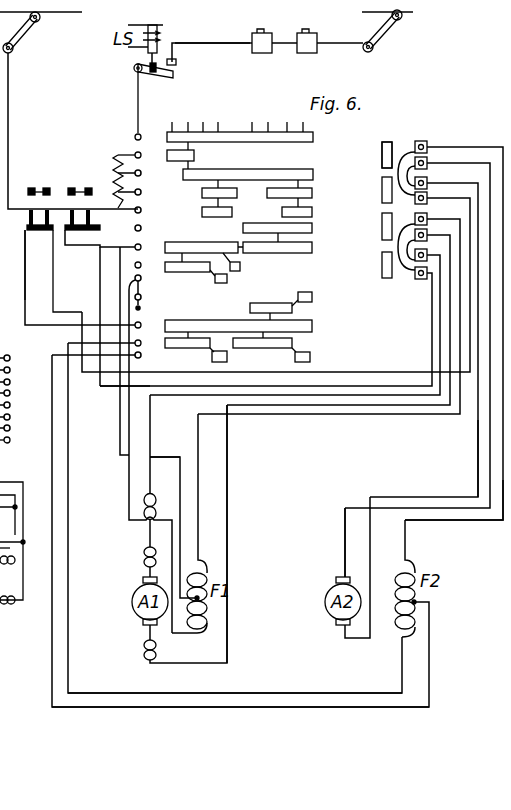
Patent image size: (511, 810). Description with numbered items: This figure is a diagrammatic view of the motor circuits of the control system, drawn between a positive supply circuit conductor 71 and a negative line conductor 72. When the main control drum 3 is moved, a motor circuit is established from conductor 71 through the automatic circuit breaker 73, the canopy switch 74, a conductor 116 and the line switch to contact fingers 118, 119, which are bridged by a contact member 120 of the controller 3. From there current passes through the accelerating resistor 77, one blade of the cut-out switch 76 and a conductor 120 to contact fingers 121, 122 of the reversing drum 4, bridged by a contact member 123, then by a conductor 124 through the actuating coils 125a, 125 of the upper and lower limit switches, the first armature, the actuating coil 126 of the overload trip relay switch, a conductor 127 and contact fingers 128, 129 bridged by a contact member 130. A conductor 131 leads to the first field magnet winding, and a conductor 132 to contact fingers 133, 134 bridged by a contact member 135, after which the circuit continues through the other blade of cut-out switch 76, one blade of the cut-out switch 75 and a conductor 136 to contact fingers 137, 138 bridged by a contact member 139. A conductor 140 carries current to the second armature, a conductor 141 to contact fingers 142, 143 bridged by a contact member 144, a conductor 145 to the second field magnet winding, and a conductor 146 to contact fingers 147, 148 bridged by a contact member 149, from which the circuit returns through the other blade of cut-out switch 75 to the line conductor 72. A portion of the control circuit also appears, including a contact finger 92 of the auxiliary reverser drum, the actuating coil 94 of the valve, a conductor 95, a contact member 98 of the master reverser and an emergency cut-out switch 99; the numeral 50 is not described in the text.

The negative line conductor 72 is at (66, 12).
The positive supply circuit conductor 71 is at (413, 12).
The automatic circuit breaker 73 is at (305, 53).
The canopy switch 74 is at (255, 53).
The conductor 116 is at (227, 47).
The contact finger 118 is at (141, 133).
The contact finger 119 is at (141, 174).
The contact member / conductor 120 is at (223, 139).
The main control drum 3 is at (283, 160).
The reversing drum 4 is at (393, 168).
The accelerating resistor 77 is at (118, 157).
The cut-out switch 75 is at (46, 181).
The cut-out switch 76 is at (80, 189).
The conductor 50 is at (25, 268).
The conductor 136 is at (61, 262).
The contact finger 134 is at (136, 247).
The contact finger 133 is at (136, 265).
The contact finger 148 is at (141, 325).
The contact finger 147 is at (141, 345).
The contact member 135 is at (208, 250).
The contact member 149 is at (175, 330).
The contact member 144 is at (382, 160).
The contact member 139 is at (382, 197).
The contact member 130 is at (382, 230).
The contact member 123 is at (382, 262).
The contact finger 143 is at (428, 146).
The contact finger 142 is at (428, 162).
The contact finger 138 is at (428, 182).
The contact finger 137 is at (428, 197).
The contact finger 129 is at (428, 218).
The contact finger 128 is at (435, 228).
The contact finger 122 is at (428, 254).
The contact finger 121 is at (421, 280).
The conductor 131 is at (405, 412).
The conductor 124 is at (440, 397).
The conductor 140 is at (478, 479).
The conductor 145 is at (492, 524).
The conductor 132 is at (130, 478).
The actuating coil 125a is at (153, 493).
The actuating coil 125 is at (145, 558).
The actuating coil 126 is at (156, 648).
The conductor 127 is at (227, 542).
The conductor 141 is at (345, 550).
The conductor 146 is at (336, 698).
The conductor 95 is at (0, 462).
The actuating coil 94 is at (18, 558).
The contact member 98 is at (10, 534).
The emergency cut-out switch 99 is at (10, 536).
The contact finger 92 is at (18, 618).